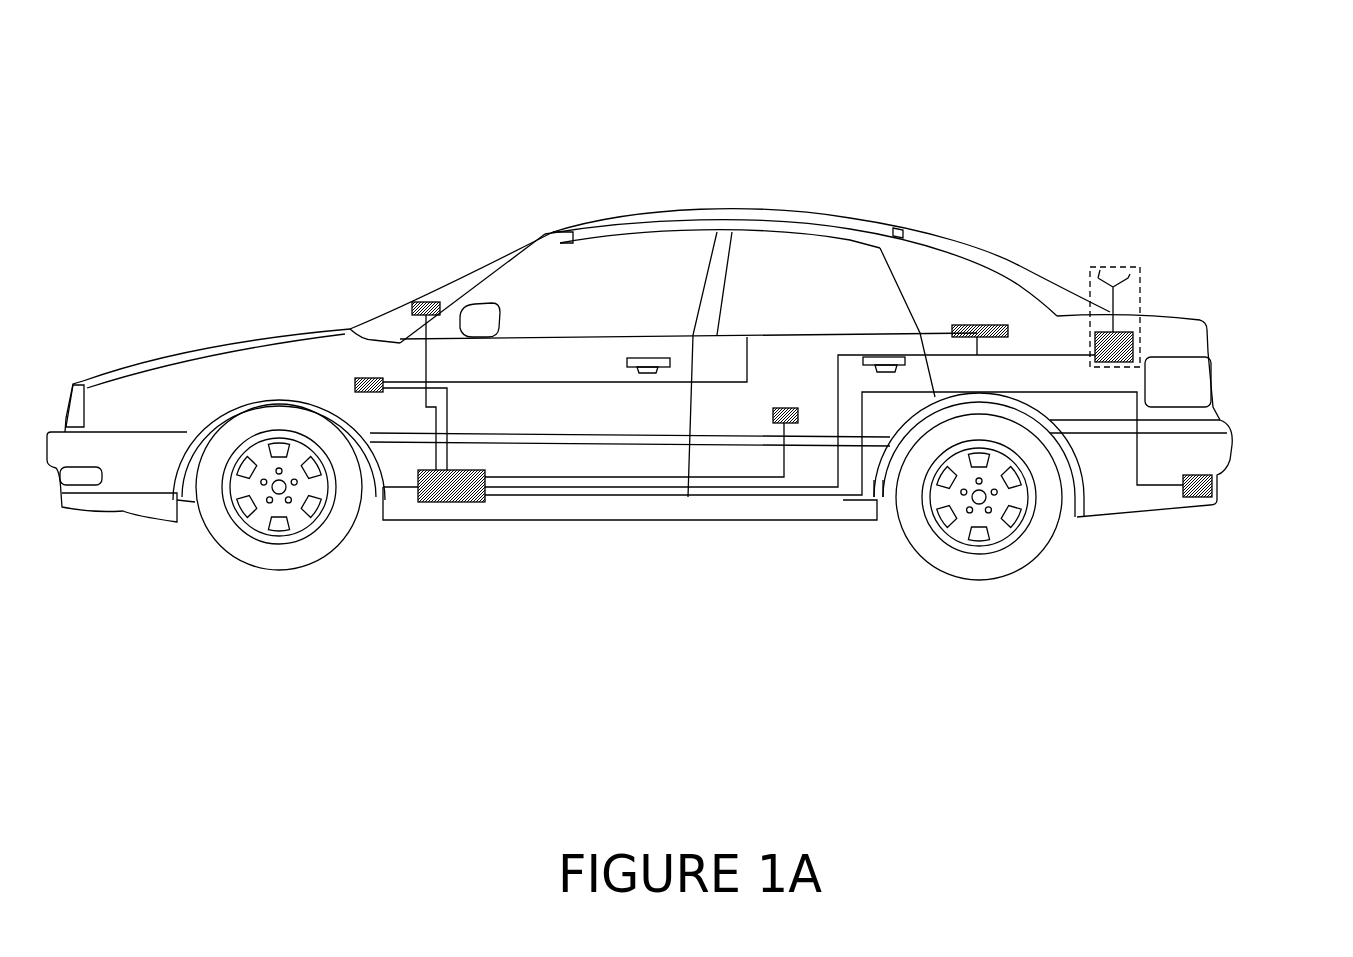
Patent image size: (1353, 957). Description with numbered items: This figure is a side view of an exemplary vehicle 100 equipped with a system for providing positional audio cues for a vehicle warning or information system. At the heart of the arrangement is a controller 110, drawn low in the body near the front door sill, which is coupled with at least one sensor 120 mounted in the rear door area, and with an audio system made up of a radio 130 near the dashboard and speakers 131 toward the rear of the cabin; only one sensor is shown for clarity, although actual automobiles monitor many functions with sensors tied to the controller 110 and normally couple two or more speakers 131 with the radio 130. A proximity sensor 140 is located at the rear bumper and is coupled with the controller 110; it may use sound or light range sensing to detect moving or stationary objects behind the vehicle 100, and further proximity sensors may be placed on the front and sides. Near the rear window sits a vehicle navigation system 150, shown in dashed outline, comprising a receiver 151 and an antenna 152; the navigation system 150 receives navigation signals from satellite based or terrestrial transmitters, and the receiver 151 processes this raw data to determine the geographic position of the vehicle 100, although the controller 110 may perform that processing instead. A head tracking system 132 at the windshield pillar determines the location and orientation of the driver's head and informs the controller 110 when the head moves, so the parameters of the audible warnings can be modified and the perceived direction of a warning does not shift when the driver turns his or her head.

The vehicle 100 is at (72, 46).
The controller 110 is at (470, 503).
The sensor 120 is at (796, 424).
The radio 130 is at (368, 378).
The speakers 131 is at (982, 325).
The head tracking system 132 is at (424, 302).
The proximity sensor 140 is at (1214, 475).
The vehicle navigation system 150 is at (1142, 268).
The receiver 151 is at (1135, 332).
The antenna 152 is at (1107, 283).